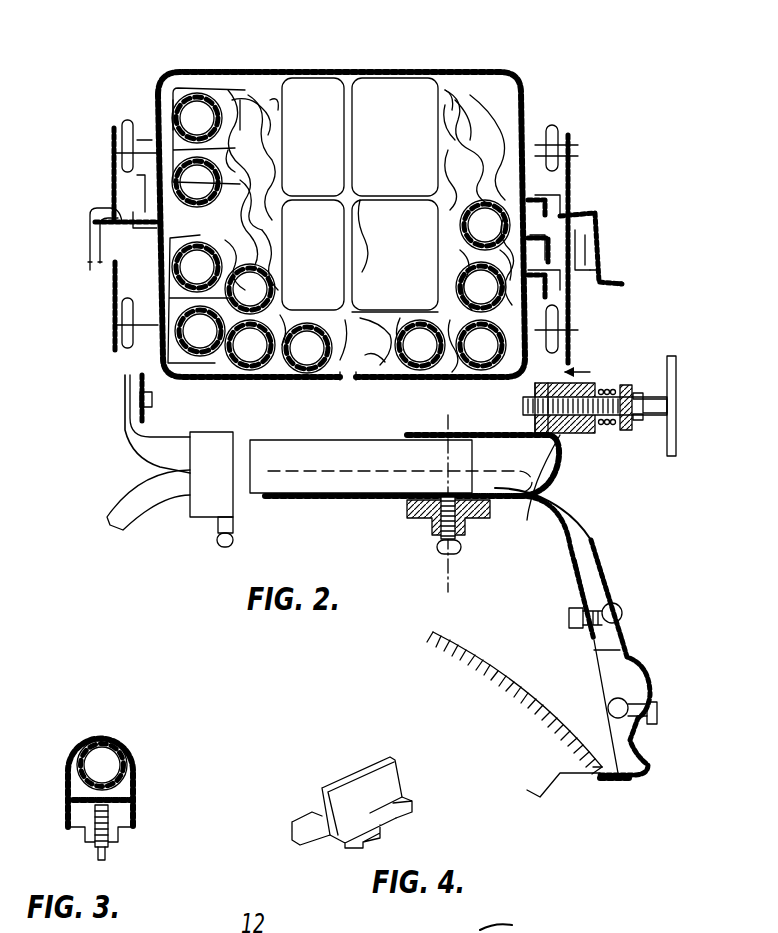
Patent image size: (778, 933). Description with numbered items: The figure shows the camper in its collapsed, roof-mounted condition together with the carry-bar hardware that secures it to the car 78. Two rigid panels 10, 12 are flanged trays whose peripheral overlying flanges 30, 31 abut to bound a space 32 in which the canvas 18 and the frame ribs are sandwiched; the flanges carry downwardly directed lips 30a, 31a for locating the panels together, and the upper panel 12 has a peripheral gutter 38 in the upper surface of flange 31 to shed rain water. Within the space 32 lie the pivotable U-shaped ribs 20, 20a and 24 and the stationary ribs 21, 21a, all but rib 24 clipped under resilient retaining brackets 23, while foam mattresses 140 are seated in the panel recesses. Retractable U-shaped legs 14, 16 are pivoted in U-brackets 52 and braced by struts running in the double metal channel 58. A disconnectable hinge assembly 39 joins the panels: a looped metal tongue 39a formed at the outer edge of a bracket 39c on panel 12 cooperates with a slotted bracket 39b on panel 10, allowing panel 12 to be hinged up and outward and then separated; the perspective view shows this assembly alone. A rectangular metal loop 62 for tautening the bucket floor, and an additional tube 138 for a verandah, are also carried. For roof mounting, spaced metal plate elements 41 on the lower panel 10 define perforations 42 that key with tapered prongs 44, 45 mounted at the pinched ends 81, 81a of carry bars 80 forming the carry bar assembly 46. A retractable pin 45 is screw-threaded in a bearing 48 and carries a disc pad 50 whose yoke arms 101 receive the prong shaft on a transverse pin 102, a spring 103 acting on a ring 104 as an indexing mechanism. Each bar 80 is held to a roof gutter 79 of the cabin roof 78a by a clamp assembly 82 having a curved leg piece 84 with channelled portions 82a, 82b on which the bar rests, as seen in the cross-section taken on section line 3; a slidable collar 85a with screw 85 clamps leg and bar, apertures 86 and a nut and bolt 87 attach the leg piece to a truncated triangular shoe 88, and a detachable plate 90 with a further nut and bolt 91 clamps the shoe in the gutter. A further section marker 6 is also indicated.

In FIG. 2, the rigid panel 12 is at (456, 70).
In FIG. 2, the foam mattresses 140 is at (395, 100).
In FIG. 2, the space 32 is at (447, 273).
In FIG. 2, the pivotable U-shaped rib 20a is at (250, 143).
In FIG. 2, the pivotable U-shaped rib 20 is at (240, 262).
In FIG. 2, the pivotable U-shaped rib 24 is at (276, 290).
In FIG. 2, the stationary U-shaped rib 21 is at (208, 360).
In FIG. 2, the canvas 18 is at (258, 105).
In FIG. 2, the resilient retaining brackets 23 is at (200, 85).
In FIG. 2, the stationary U-shaped rib 21a is at (238, 100).
In FIG. 2, the double metal channel 58 is at (143, 150).
In FIG. 2, the retractable U-shaped legs 16 is at (125, 125).
In FIG. 2, the U-bracket 52 is at (112, 318).
In FIG. 2, the peripheral overlying flange 31 is at (118, 212).
In FIG. 2, the peripheral overlying flange 30 is at (95, 252).
In FIG. 2, the peripheral lip 31a is at (90, 265).
In FIG. 2, the peripheral lip 30a is at (100, 278).
In FIG. 2, the peripheral gutter 38 is at (585, 215).
In FIG. 2, the bracket 39c is at (592, 240).
In FIG. 4, the bracket 39c is at (385, 775).
In FIG. 2, the slotted bracket 39b is at (602, 275).
In FIG. 4, the slotted bracket 39b is at (403, 806).
In FIG. 2, the looped metal tongue 39a is at (606, 286).
In FIG. 4, the looped metal tongue 39a is at (385, 830).
In FIG. 4, the disconnectable hinge assemblies 39 is at (335, 847).
In FIG. 2, the retractable U-shaped legs 14 is at (562, 320).
In FIG. 2, the section line 6 is at (589, 373).
In FIG. 2, the pinched end of carry bar 81 is at (125, 405).
In FIG. 2, the tapered prong 44 is at (152, 407).
In FIG. 2, the rigid panel 10 is at (262, 375).
In FIG. 2, the rectangular metal loop 62 is at (302, 378).
In FIG. 2, the additional tube 138 is at (345, 380).
In FIG. 2, the carry bars 80 is at (300, 456).
In FIG. 3, the carry bars 80 is at (120, 750).
In FIG. 2, the channelled portion 82a is at (335, 499).
In FIG. 3, the channelled portion 82a is at (130, 800).
In FIG. 2, the apertures 86 is at (300, 499).
In FIG. 2, the section line 3— 3 is at (445, 426).
In FIG. 2, the slidable collar 85a is at (430, 520).
In FIG. 2, the bolt or screw 85 is at (455, 552).
In FIG. 3, the bolt or screw 85 is at (107, 853).
In FIG. 2, the metal plate elements 41 is at (530, 388).
In FIG. 2, the carry bar assembly 46 is at (592, 527).
In FIG. 2, the curved leg piece 84 is at (565, 540).
In FIG. 3, the curved leg piece 84 is at (80, 782).
In FIG. 2, the pinched end of carry bar 81a is at (527, 520).
In FIG. 2, the channelled portion 82b is at (574, 575).
In FIG. 2, the clamp assemblies 82 is at (652, 665).
In FIG. 2, the nut and bolt 87 is at (622, 612).
In FIG. 2, the truncated triangular shoe 88 is at (600, 668).
In FIG. 2, the further nut and bolt 91 is at (650, 722).
In FIG. 2, the detachable plate 90 is at (648, 766).
In FIG. 2, the gutters 79 is at (628, 783).
In FIG. 2, the cabin roof 78a is at (514, 670).
In FIG. 2, the car 78 is at (474, 652).
In FIG. 2, the bearing 48 is at (560, 440).
In FIG. 2, the retractable pin 45 is at (530, 412).
In FIG. 2, the perforation 42 is at (530, 405).
In FIG. 2, the spring 103 is at (624, 385).
In FIG. 2, the ring 104 is at (603, 438).
In FIG. 2, the transverse pin 102 is at (640, 430).
In FIG. 2, the yoke arms 101 is at (672, 432).
In FIG. 2, the disc pads 50 is at (676, 378).